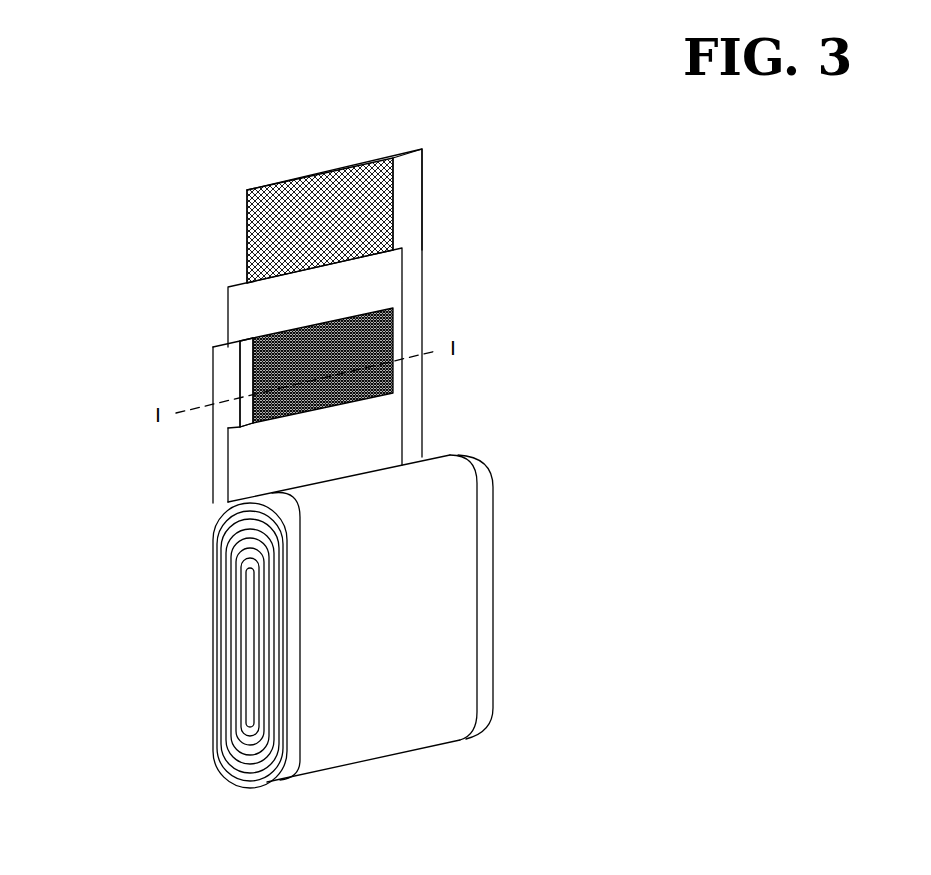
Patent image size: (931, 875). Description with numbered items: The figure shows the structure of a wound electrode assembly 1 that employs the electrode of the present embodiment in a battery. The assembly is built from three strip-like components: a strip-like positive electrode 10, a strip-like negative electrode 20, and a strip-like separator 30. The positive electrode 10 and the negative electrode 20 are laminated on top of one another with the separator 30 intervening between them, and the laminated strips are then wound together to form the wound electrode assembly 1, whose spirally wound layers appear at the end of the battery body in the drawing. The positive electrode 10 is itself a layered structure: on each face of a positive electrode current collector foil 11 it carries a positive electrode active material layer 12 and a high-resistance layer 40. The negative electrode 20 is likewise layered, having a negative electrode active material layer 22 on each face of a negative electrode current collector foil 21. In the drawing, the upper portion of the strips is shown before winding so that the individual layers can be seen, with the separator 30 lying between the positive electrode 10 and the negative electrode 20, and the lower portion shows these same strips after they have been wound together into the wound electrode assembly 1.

The wound electrode assembly 1 is at (503, 572).
The positive electrode 10 is at (222, 368).
The positive electrode current collector foil 11 is at (220, 362).
The positive electrode active material layer 12 is at (237, 337).
The negative electrode 20 is at (415, 303).
The negative electrode current collector foil 21 is at (407, 202).
The negative electrode active material layer 22 is at (368, 220).
The separator 30 is at (405, 280).
The high-resistance layer 40 is at (227, 346).